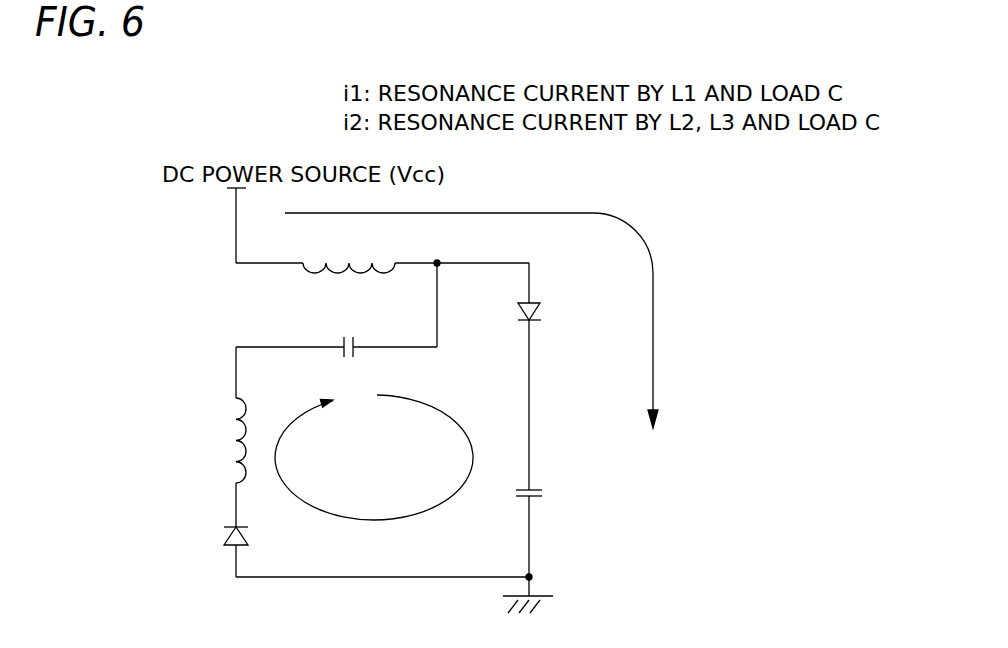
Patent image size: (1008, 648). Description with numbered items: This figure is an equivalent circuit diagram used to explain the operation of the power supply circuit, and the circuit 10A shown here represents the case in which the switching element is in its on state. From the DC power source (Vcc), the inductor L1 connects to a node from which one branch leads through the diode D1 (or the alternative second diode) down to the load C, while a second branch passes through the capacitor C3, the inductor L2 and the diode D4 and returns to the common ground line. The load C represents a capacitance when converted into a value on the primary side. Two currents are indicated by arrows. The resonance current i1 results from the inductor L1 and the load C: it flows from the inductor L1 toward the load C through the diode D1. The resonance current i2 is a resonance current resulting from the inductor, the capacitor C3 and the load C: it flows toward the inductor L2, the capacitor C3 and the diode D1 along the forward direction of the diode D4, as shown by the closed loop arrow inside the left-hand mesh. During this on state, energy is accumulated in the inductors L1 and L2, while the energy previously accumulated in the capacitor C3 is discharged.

The circuit 10A is at (205, 138).
The inductor L1 is at (349, 255).
The capacitor C3 is at (347, 333).
The inductor L2 is at (227, 440).
The diode D4 is at (219, 539).
The diode D1 is at (579, 296).
The load C is at (574, 495).
The resonance current i1 is at (479, 320).
The resonance current i2 is at (374, 457).